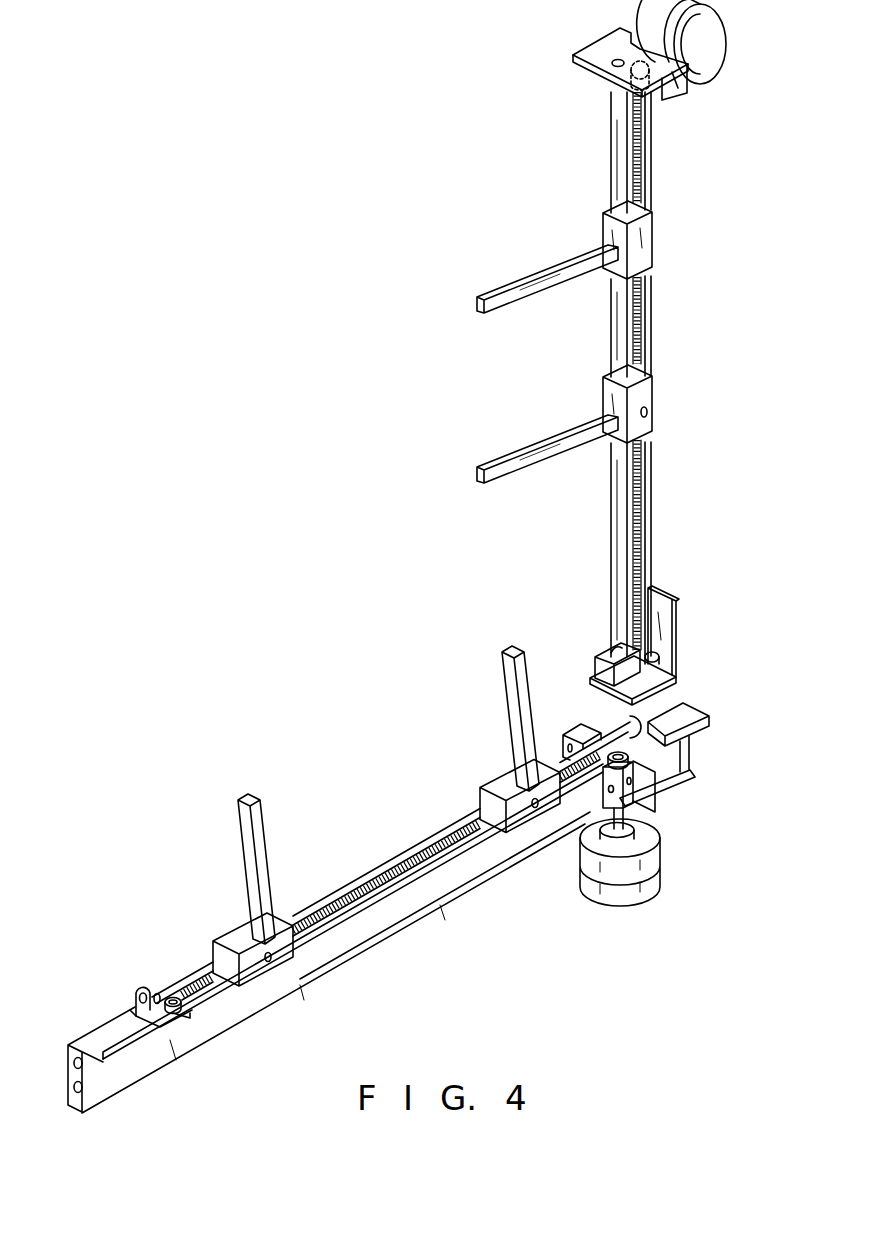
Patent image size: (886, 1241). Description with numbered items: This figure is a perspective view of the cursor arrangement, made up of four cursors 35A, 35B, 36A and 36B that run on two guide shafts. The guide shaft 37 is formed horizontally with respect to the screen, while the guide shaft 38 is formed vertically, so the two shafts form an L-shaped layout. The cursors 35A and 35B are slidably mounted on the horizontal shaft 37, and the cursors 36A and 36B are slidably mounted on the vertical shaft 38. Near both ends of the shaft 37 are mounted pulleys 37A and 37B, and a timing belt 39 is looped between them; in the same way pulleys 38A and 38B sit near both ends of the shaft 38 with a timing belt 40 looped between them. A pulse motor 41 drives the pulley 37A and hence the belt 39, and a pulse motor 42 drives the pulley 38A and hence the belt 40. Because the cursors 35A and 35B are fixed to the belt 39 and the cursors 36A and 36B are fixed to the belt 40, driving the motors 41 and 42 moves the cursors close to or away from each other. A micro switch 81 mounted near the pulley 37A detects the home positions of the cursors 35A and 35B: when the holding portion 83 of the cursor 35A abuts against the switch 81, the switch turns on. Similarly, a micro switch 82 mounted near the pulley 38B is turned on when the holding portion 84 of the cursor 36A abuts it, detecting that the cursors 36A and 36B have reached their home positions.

The pulse motor 42 is at (722, 62).
The pulley 38A is at (650, 88).
The guide shaft 38 is at (611, 145).
The timing belt 40 is at (643, 314).
The cursor 36A is at (517, 283).
The cursor 36B is at (525, 468).
The holding portion 84 is at (652, 419).
The micro switch 82 is at (598, 662).
The pulley 38B is at (652, 670).
The cursor 35A is at (503, 695).
The cursor 35B is at (240, 833).
The micro switch 81 is at (566, 728).
The pulley 37A is at (640, 748).
The pulley 37B is at (177, 1011).
The guide shaft 37 is at (364, 876).
The holding portion 83 is at (518, 802).
The pulse motor 41 is at (660, 875).
The timing belt 39 is at (386, 898).